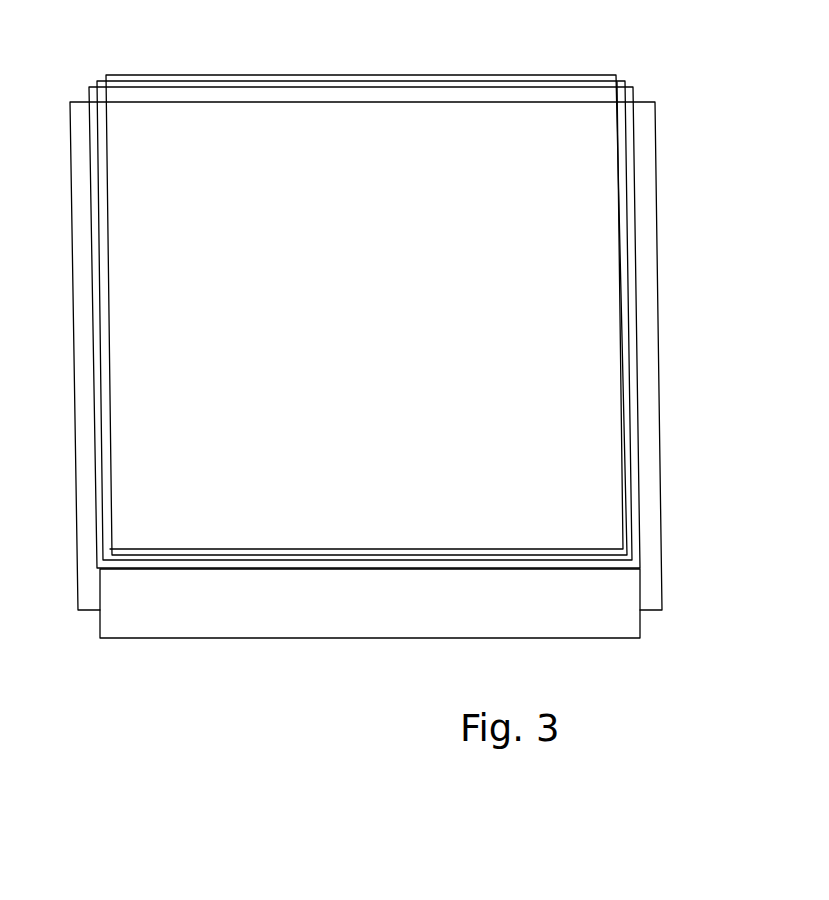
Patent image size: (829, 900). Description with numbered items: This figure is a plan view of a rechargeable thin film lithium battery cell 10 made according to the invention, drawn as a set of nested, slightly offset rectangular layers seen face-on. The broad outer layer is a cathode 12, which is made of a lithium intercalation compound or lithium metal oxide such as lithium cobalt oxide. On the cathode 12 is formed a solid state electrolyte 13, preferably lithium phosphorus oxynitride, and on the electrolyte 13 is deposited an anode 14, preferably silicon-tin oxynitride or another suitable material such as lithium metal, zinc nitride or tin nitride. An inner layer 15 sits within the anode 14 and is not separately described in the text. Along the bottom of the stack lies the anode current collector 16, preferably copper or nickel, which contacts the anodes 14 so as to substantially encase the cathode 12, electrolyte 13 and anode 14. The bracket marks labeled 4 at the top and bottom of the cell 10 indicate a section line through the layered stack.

The thin film lithium battery cell 10 is at (688, 70).
The cathode 12 is at (653, 585).
The solid state electrolyte 13 is at (630, 192).
The anode 14 is at (624, 162).
The display panel 15 is at (602, 146).
The anode current collector 16 is at (558, 628).
The section line 4- 4 is at (191, 70).